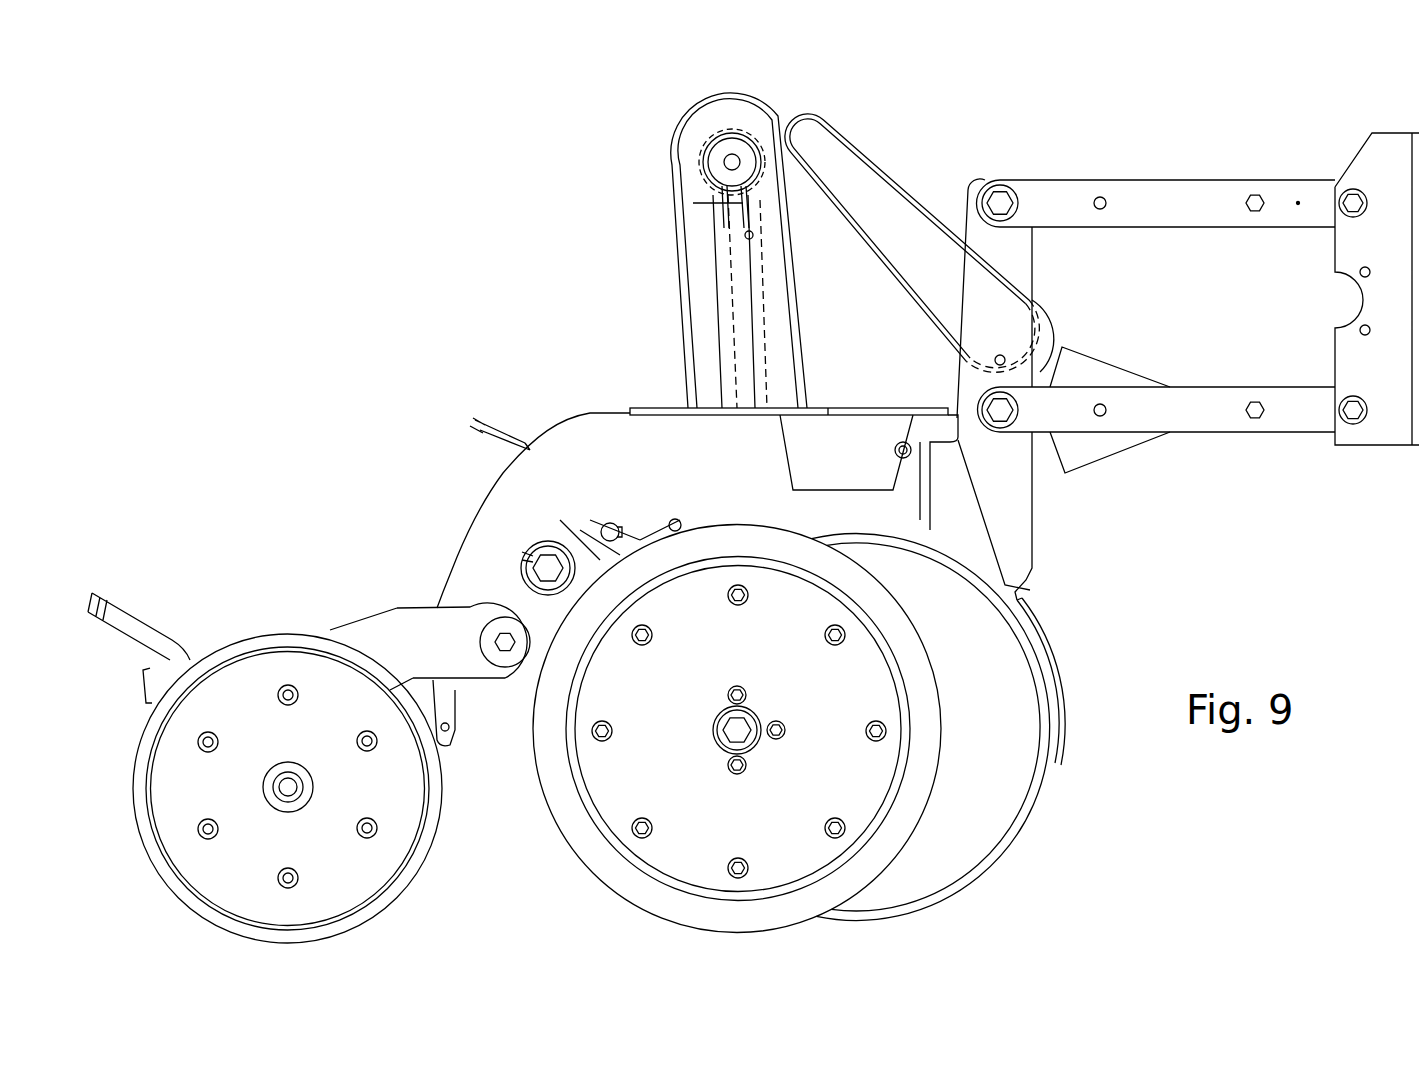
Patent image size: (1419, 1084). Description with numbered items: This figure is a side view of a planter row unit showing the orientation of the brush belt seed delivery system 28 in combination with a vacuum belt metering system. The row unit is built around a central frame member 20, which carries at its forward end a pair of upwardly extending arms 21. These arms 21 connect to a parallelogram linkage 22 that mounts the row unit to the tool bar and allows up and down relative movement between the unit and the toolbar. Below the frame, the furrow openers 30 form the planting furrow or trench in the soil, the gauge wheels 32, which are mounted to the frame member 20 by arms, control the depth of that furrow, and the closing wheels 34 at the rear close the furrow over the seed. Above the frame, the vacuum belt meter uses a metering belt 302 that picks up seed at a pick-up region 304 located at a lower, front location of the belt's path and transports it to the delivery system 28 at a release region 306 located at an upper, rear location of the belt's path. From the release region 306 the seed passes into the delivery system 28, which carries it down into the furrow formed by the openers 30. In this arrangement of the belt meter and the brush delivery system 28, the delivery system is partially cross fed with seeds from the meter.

The central frame member 20 is at (483, 510).
The upwardly extending arms 21 is at (1028, 247).
The parallelogram linkage 22 is at (1165, 193).
The delivery system 28 is at (664, 131).
The furrow openers 30 is at (998, 848).
The gauge wheels 32 is at (582, 848).
The closing wheels 34 is at (250, 642).
The metering belt 302 is at (878, 164).
The pick-up region 304 is at (1050, 313).
The release region 306 is at (792, 110).